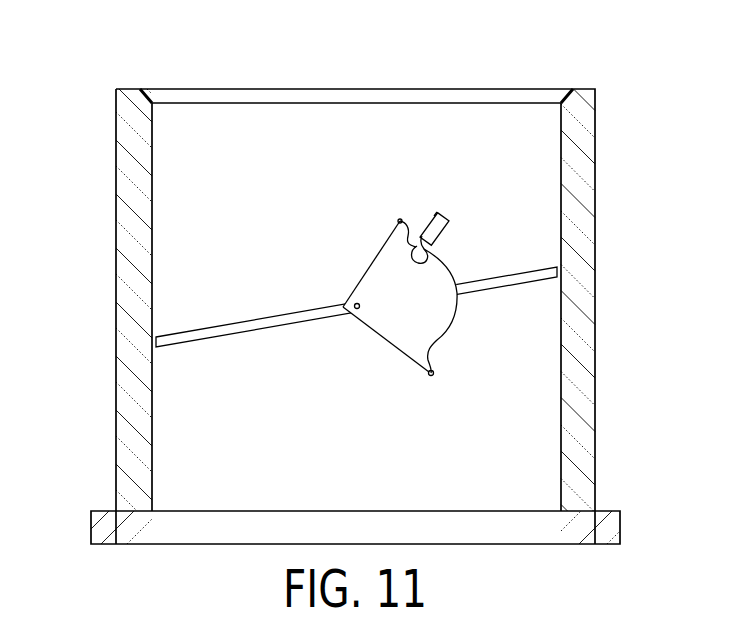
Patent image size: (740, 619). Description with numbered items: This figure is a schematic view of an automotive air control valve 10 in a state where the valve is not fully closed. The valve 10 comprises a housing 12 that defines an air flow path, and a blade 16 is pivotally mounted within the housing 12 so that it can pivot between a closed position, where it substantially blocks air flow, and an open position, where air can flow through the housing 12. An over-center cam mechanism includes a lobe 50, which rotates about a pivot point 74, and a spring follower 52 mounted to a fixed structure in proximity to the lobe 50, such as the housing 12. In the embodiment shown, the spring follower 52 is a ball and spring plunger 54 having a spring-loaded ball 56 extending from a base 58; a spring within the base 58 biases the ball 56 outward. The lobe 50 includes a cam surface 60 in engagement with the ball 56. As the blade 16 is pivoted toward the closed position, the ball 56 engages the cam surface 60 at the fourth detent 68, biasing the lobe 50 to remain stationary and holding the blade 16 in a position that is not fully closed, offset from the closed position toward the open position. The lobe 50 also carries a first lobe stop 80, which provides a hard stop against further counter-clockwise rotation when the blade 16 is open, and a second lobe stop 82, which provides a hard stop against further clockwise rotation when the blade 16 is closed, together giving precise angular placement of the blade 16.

The automotive air control valve 10 is at (96, 55).
The housing 12 is at (577, 287).
The blade 16 is at (250, 321).
The lobe 50 is at (373, 285).
The spring follower 52 is at (441, 226).
The ball and spring plunger 54 is at (434, 229).
The spring-loaded ball 56 is at (416, 245).
The base 58 is at (434, 216).
The cam surface 60 is at (457, 311).
The fourth detent 68 is at (428, 254).
The pivot point 74 is at (352, 316).
The first lobe stop 80 is at (434, 376).
The second lobe stop 82 is at (396, 221).